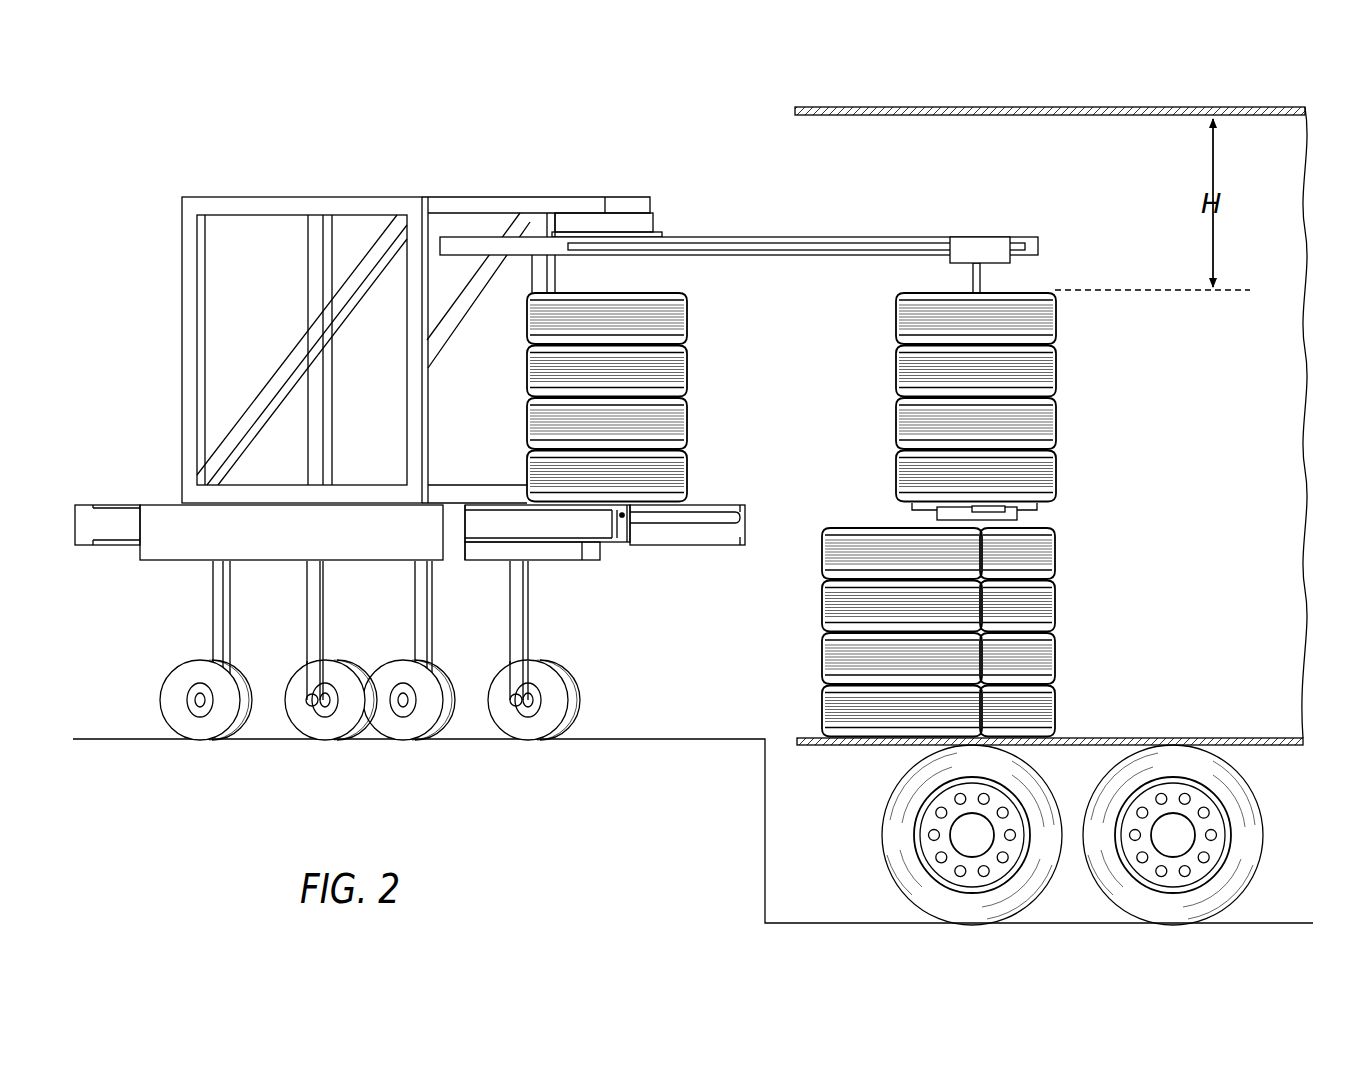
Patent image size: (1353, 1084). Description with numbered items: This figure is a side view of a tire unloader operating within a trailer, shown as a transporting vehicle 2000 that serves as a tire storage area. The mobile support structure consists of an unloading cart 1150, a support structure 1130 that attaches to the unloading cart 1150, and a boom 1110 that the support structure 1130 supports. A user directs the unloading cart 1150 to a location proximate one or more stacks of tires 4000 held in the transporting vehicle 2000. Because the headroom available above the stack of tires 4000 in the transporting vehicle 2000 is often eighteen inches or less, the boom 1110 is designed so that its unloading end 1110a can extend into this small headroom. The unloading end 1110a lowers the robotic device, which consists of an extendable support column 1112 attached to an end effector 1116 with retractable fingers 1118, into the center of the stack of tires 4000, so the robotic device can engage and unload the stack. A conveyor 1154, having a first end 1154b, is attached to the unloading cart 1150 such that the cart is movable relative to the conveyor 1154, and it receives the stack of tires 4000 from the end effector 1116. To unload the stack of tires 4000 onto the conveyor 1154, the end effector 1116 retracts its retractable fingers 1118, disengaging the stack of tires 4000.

The transporting vehicle 2000 is at (1084, 103).
The support structure 1130 is at (175, 290).
The unloading cart 1150 is at (199, 539).
The conveyor 1154 is at (667, 526).
The first end 1154b is at (744, 516).
The boom 1110 is at (777, 231).
The unloading end 1110a is at (1045, 246).
The extendable support column 1112 is at (970, 280).
The end effector 1116 is at (1006, 518).
The retractable fingers 1118 is at (908, 512).
The stack of tires 4000 is at (700, 382).